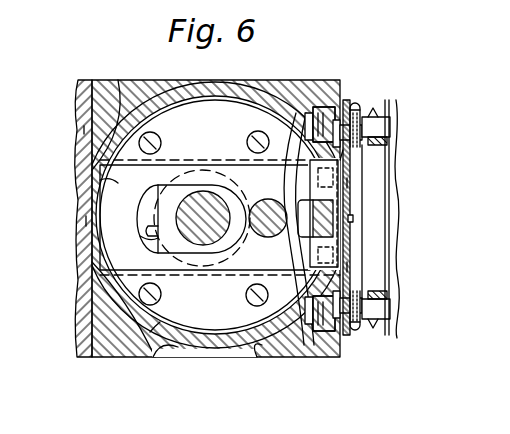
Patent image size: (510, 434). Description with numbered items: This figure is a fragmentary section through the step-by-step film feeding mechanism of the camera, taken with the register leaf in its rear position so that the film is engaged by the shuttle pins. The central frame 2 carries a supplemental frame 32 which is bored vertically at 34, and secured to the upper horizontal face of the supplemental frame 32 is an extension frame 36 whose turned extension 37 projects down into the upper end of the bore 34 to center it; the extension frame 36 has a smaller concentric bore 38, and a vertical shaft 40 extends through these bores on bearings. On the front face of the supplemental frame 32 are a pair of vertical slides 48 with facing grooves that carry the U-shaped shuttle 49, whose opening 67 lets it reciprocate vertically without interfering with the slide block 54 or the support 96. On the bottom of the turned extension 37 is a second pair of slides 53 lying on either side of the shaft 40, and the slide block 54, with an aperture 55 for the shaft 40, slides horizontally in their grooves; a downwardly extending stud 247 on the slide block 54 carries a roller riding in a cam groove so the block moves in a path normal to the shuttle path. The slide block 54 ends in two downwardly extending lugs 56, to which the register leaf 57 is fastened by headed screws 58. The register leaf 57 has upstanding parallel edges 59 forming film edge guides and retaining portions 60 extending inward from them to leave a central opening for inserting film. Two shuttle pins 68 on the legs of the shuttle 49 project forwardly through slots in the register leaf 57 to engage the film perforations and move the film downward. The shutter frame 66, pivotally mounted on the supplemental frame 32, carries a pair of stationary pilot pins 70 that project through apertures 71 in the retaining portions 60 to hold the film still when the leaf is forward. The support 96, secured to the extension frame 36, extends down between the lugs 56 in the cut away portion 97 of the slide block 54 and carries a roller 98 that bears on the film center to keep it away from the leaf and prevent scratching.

The central frame 2 is at (84, 130).
The supplemental frame 32 is at (108, 80).
The vertical bore 34 is at (155, 335).
The extension frame 36 is at (173, 350).
The turned extension 37 is at (86, 222).
The vertical bore 38 is at (150, 232).
The vertical shaft 40 is at (185, 206).
The slides 48 is at (328, 112).
The shuttle 49 is at (344, 120).
The slides 53 is at (84, 114).
The slide block 54 is at (110, 183).
The aperture 55 is at (143, 237).
The lugs 56 is at (318, 168).
The register leaf 57 is at (352, 240).
The headed screws 58 is at (348, 183).
The parallel edges 59 is at (355, 112).
The retaining portions 60 is at (378, 118).
The shutter frame 66 is at (398, 150).
The opening 67 is at (303, 160).
The shuttle pins 68 is at (353, 105).
The stationary pilot pins 70 is at (385, 126).
The apertures 71 is at (366, 110).
The support 96 is at (290, 170).
The cut away portion 97 is at (298, 358).
The roller 98 is at (350, 218).
The stud 247 is at (262, 240).